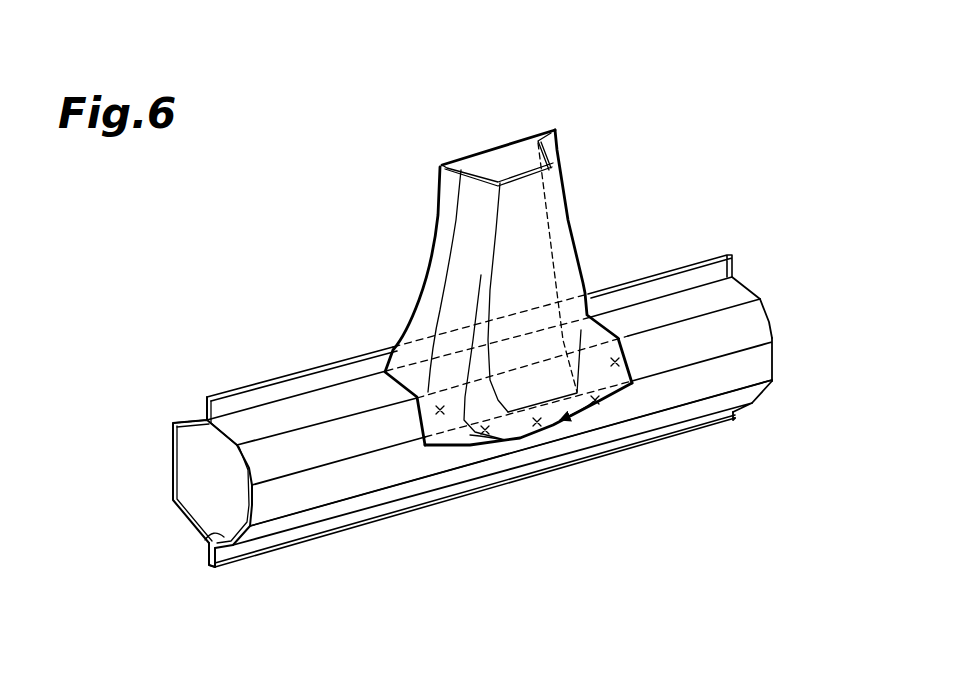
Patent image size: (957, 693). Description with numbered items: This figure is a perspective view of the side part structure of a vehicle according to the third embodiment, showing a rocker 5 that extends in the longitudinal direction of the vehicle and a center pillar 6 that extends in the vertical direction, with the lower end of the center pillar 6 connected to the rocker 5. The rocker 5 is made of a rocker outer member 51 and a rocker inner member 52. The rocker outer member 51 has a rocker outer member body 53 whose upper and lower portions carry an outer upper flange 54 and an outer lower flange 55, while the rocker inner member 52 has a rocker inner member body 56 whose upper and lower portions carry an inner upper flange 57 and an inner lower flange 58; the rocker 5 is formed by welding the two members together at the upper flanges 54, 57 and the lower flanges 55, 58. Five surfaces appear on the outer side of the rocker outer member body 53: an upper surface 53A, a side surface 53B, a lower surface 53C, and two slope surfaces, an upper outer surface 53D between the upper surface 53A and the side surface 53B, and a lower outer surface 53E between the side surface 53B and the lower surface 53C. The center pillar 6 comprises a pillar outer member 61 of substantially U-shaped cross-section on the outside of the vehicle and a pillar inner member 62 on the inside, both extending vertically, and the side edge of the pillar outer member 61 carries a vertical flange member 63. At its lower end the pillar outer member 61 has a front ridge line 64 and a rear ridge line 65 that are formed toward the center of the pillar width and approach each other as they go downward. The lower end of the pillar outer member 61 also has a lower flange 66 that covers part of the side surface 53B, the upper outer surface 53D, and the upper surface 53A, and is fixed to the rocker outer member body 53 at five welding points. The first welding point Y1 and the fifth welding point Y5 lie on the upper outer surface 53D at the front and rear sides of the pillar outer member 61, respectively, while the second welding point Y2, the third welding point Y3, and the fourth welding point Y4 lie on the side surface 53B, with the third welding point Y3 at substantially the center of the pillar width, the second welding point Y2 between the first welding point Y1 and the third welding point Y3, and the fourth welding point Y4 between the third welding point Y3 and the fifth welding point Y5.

The rocker 5 is at (483, 400).
The center pillar 6 is at (503, 299).
The rocker outer member 51 is at (442, 501).
The rocker inner member 52 is at (180, 411).
The rocker outer member body 53 is at (359, 498).
The upper surface 53A is at (692, 297).
The side surface 53B is at (757, 368).
The lower surface 53C is at (207, 541).
The upper outer surface 53D is at (752, 327).
The lower outer surface 53E is at (717, 403).
The outer upper flange 54 is at (287, 392).
The outer lower flange 55 is at (264, 548).
The rocker inner member body 56 is at (195, 463).
The inner upper flange 57 is at (208, 396).
The inner lower flange 58 is at (205, 557).
The pillar outer member 61 is at (563, 249).
The pillar inner member 62 is at (502, 163).
The vertical flange member 63 is at (446, 219).
The front ridge line 64 is at (497, 355).
The rear ridge line 65 is at (582, 378).
The lower flange 66 is at (457, 437).
The first welding point Y1 is at (438, 416).
The second welding point Y2 is at (487, 435).
The third welding point Y3 is at (538, 426).
The fourth welding point Y4 is at (596, 404).
The fifth welding point Y5 is at (619, 365).